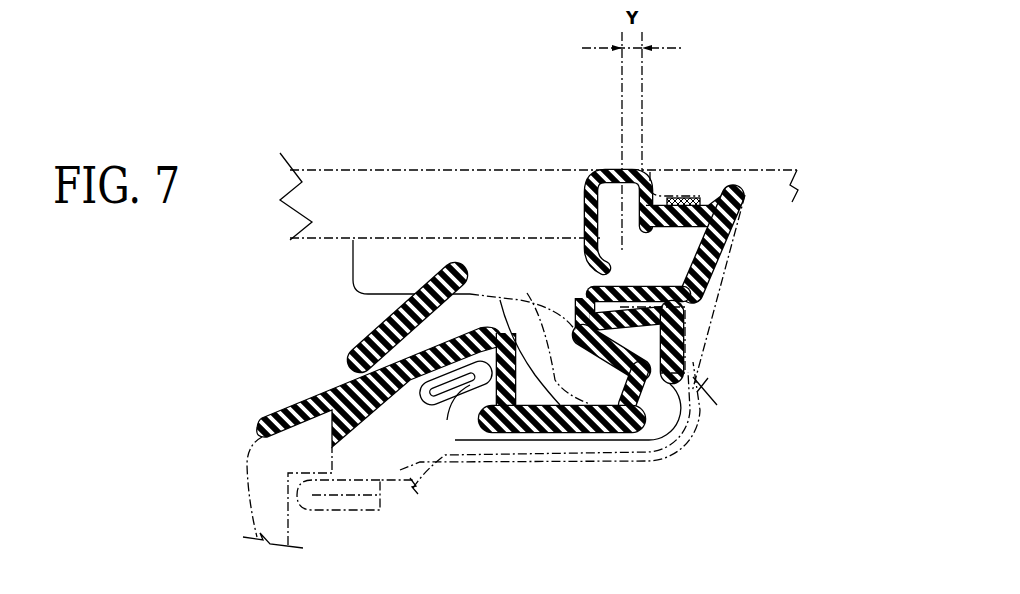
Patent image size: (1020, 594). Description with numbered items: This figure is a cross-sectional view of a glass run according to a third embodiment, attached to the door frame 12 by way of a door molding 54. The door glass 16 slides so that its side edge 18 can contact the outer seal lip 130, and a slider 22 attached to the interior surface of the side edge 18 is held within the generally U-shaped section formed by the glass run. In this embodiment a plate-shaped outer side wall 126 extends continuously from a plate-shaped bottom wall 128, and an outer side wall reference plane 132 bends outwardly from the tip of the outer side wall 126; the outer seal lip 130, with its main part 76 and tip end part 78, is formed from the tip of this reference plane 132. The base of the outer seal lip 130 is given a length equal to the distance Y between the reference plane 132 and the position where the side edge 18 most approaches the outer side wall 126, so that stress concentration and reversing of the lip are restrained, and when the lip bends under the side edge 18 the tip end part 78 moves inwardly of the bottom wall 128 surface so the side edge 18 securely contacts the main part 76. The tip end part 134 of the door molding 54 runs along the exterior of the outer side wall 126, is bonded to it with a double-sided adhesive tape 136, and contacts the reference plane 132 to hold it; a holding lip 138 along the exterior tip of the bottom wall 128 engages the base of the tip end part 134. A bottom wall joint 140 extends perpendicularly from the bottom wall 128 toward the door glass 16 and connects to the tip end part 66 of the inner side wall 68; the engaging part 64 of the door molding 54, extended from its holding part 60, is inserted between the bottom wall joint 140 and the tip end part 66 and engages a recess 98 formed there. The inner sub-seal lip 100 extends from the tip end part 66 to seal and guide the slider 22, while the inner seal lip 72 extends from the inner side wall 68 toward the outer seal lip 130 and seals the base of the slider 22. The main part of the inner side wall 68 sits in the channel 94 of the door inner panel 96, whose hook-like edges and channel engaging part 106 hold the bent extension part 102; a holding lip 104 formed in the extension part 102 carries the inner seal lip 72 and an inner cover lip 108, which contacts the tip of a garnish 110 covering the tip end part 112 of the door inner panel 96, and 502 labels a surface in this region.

The door frame 12 is at (696, 465).
The door glass 16 is at (305, 170).
The side edge 18 is at (645, 182).
The slider 22 is at (353, 267).
The door molding 54 is at (781, 162).
The holding part 60 is at (708, 288).
The engaging part 64 is at (575, 303).
The tip end part 66 is at (687, 360).
The inner side wall 68 is at (572, 442).
The inner seal lip 72 is at (380, 358).
The main part 76 is at (585, 206).
The tip end part 78 is at (608, 275).
The channel 94 is at (627, 455).
The door inner panel 96 is at (490, 463).
The recess 98 is at (700, 382).
The inner sub-seal lip 100 is at (688, 400).
The extension part 102 is at (522, 428).
The holding lip 104 is at (340, 357).
The channel engaging part 106 is at (455, 405).
The inner cover lip 108 is at (282, 405).
The garnish 110 is at (247, 452).
The tip end part 112 is at (287, 487).
The outer side wall 126 is at (702, 200).
The bottom wall 128 is at (720, 267).
The outer seal lip 130 is at (614, 158).
The outer side wall reference plane 132 is at (583, 237).
The tip end part 134 is at (670, 197).
The double-sided adhesive tape 136 is at (686, 205).
The holding lip 138 is at (738, 196).
The bottom wall joint 140 is at (688, 318).
The bulb surface 502 is at (588, 181).